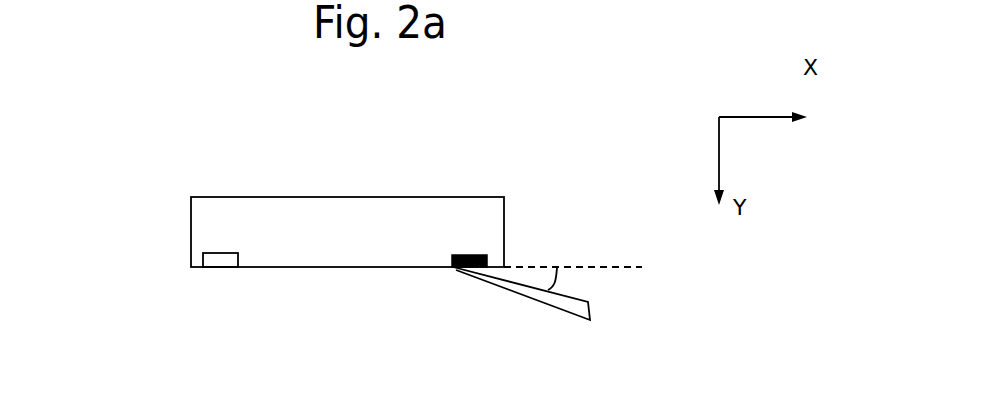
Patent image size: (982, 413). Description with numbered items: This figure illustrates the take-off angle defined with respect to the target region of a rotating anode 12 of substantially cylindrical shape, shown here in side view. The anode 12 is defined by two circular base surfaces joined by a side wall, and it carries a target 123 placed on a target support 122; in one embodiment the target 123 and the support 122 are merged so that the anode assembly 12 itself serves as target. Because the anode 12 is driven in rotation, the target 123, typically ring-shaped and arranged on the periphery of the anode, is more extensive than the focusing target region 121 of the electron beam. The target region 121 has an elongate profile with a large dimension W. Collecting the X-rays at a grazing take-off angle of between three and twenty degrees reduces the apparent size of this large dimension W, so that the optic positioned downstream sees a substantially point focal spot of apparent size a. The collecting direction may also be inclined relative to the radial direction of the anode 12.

The anode 12 is at (332, 213).
The target region 121 is at (477, 255).
The target support 122 is at (195, 232).
The target 123 is at (217, 268).
The large dimension W is at (470, 253).
The apparent focal spot size a is at (590, 310).